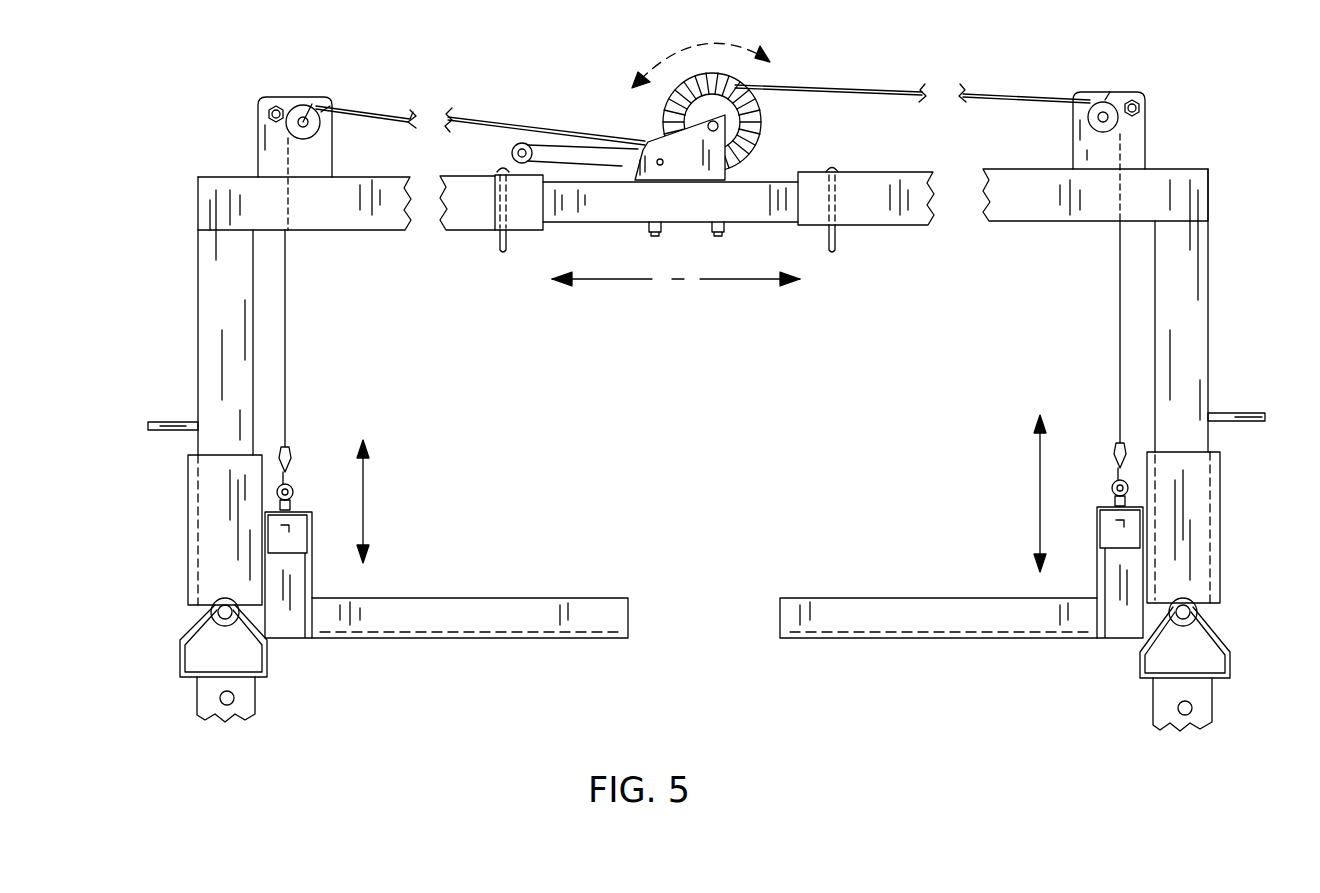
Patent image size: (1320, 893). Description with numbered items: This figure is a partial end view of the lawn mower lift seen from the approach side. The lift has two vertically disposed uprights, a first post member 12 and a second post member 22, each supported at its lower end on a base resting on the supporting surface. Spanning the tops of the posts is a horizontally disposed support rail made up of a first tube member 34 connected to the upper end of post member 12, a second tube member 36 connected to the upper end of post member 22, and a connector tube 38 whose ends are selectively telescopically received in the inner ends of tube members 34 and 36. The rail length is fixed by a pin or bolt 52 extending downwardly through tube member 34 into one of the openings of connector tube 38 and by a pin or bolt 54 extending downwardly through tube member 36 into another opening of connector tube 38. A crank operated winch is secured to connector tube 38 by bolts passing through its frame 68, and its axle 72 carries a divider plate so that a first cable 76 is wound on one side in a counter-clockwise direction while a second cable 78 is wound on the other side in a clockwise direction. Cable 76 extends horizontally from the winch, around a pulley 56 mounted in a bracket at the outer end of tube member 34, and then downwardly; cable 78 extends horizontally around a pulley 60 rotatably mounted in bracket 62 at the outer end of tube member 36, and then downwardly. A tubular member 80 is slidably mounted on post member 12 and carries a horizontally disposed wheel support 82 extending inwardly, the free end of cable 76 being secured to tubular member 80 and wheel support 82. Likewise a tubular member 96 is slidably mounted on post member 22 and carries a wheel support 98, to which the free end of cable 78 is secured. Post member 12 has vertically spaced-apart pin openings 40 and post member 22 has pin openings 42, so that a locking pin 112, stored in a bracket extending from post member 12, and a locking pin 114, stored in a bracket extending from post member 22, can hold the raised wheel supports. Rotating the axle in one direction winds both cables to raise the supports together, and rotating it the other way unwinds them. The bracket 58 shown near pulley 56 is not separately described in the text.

The first vertically disposed post member 12 is at (210, 280).
The second post member 22 is at (1220, 362).
The first tube member 34 is at (333, 215).
The second tube member 36 is at (1095, 240).
The connector tube 38 is at (736, 204).
The pin openings 40 is at (234, 700).
The pin openings 42 is at (1192, 708).
The pin or bolt 52 is at (498, 250).
The pin or bolt 54 is at (838, 250).
The pulley 56 is at (318, 100).
The left pulley bracket 58 is at (258, 143).
The pulley 60 is at (1110, 95).
The bracket 62 is at (1143, 143).
The frame 68 is at (680, 146).
The axle 72 is at (718, 126).
The first cable 76 is at (497, 126).
The second cable 78 is at (1010, 92).
The tubular member 80 is at (188, 542).
The wheel support 82 is at (484, 598).
The tubular member 96 is at (1220, 520).
The wheel support 98 is at (879, 598).
The locking pin 112 is at (195, 622).
The locking pin 114 is at (1198, 618).